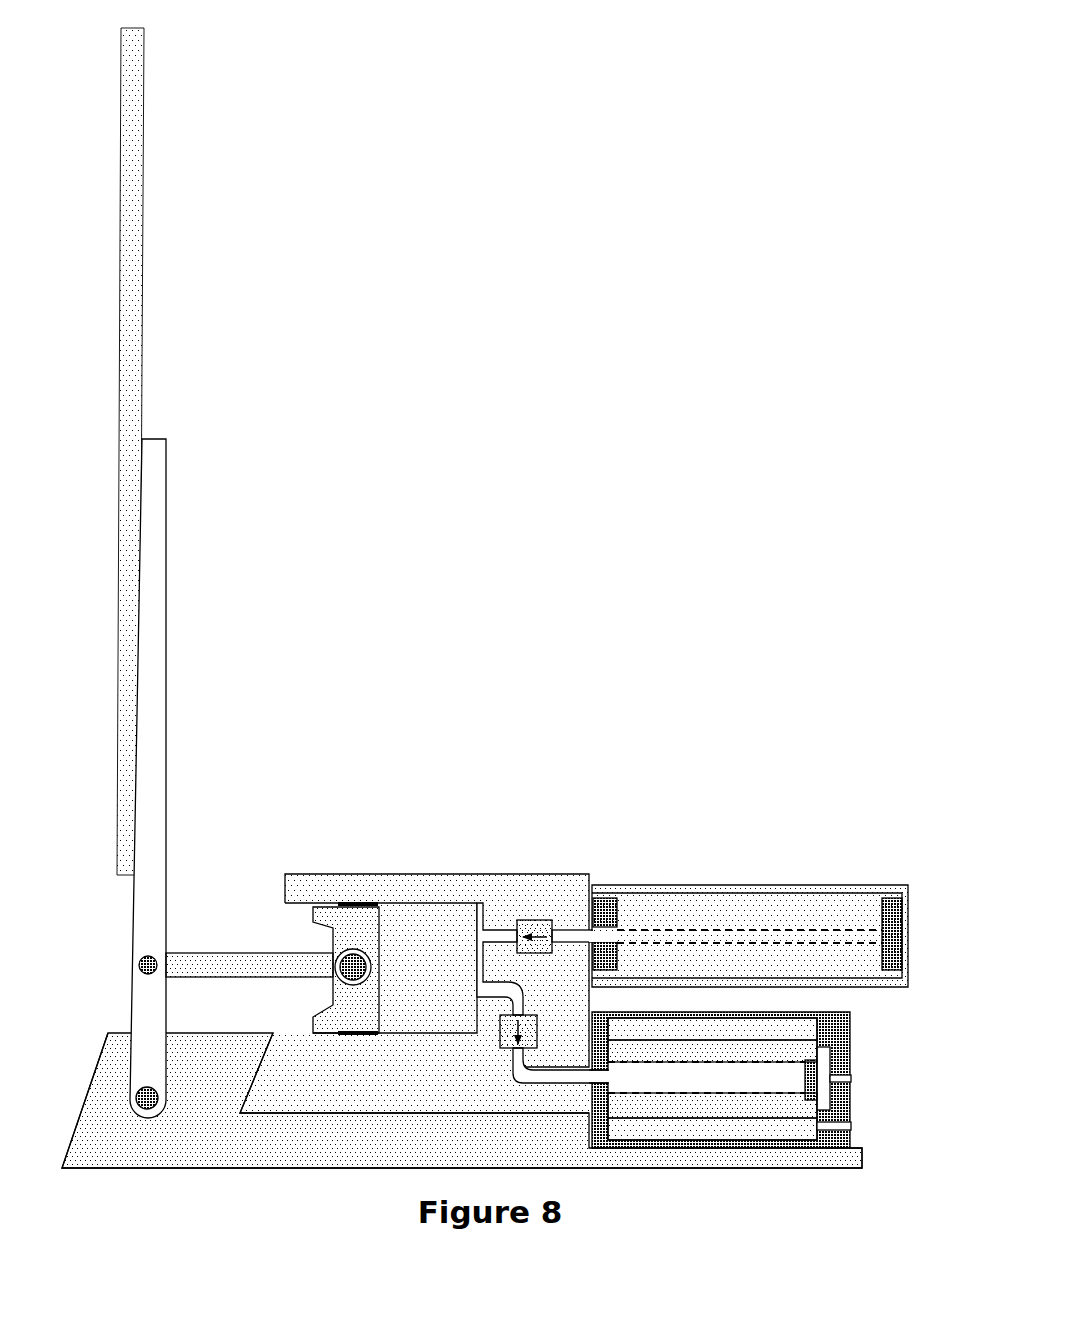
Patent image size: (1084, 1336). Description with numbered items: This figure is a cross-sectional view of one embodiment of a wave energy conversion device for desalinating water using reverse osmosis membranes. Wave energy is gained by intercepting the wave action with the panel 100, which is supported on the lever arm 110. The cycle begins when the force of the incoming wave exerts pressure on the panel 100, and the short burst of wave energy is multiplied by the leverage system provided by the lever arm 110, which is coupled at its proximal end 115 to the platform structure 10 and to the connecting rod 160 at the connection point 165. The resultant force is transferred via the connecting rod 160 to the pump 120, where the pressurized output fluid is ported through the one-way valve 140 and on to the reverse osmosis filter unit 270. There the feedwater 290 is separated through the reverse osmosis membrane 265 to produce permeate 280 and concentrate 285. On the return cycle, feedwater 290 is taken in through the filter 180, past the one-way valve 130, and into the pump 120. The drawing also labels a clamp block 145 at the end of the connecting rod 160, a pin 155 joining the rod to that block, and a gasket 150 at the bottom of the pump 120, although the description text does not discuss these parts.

The platform structure 10 is at (462, 1100).
The panel 100 is at (109, 451).
The lever arm 110 is at (172, 778).
The proximal end 115 is at (138, 1090).
The pump 120 is at (437, 970).
The one-way valve 130 is at (534, 951).
The one-way valve 140 is at (554, 1049).
The clamp block 145 is at (346, 967).
The seal gasket 150 is at (372, 1040).
The connecting pin 155 is at (333, 960).
The connecting rod 160 is at (249, 966).
The connection point 165 is at (137, 962).
The filter 180 is at (748, 936).
The reverse osmosis membrane 265 is at (712, 1077).
The reverse osmosis filter unit 270 is at (742, 1080).
The permeate 280 is at (869, 1126).
The concentrate 285 is at (853, 1078).
The feedwater 290 is at (528, 993).